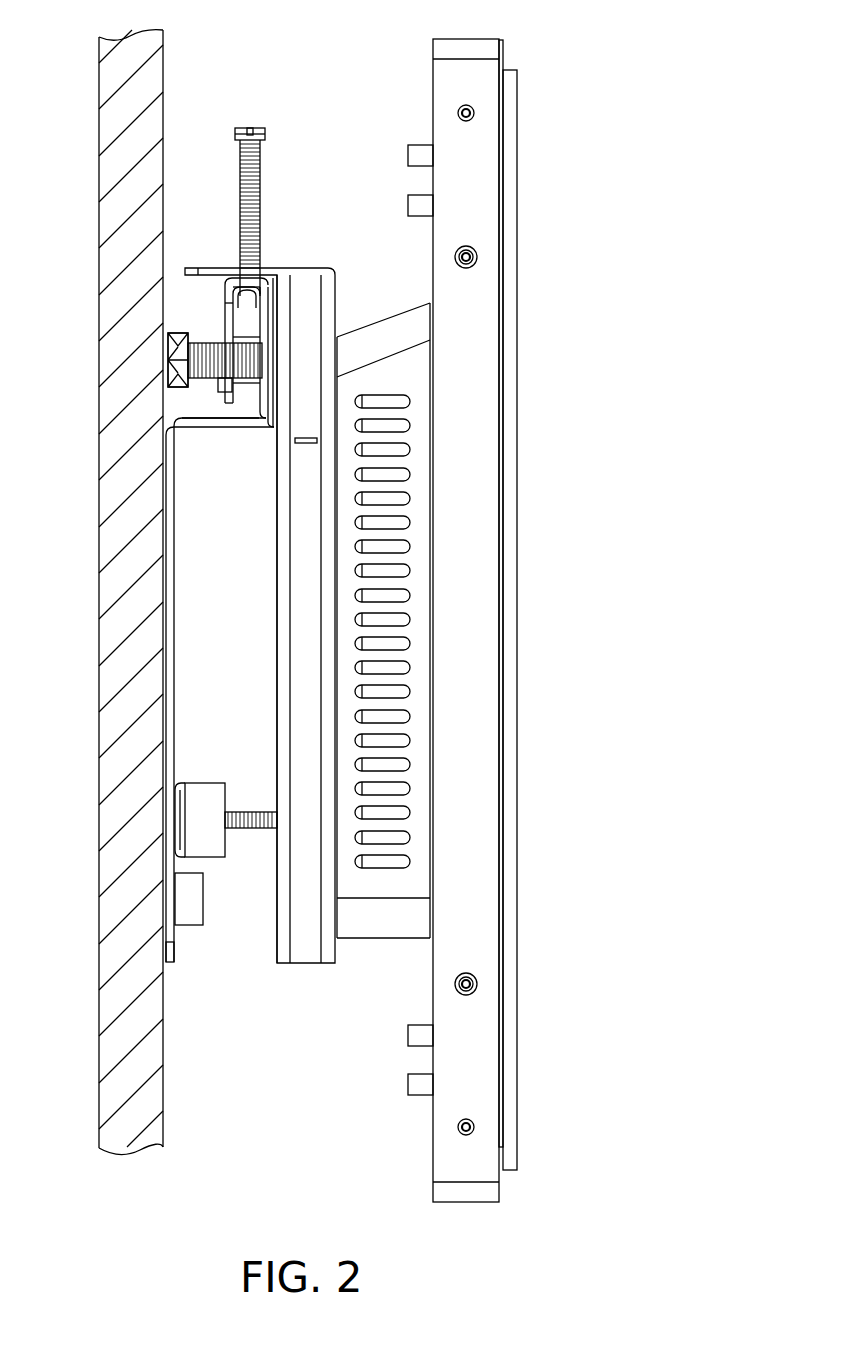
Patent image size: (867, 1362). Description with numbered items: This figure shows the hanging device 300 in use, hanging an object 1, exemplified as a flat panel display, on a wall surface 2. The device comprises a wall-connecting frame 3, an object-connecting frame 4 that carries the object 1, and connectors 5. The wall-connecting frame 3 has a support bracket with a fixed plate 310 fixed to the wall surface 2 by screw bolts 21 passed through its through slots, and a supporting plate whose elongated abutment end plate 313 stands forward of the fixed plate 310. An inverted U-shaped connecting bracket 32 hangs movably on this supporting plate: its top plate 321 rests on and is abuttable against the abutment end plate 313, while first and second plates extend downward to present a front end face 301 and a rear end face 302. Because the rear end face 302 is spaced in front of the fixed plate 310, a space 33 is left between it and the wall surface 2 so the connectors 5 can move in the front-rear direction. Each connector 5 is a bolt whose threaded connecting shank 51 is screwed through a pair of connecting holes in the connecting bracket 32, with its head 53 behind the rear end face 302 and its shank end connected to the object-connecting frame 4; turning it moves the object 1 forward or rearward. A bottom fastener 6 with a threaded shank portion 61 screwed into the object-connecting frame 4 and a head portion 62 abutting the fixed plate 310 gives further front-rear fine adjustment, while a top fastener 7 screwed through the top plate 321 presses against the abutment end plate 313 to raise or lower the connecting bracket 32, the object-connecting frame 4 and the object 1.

The object 1 is at (468, 190).
The wall surface 2 is at (165, 1080).
The wall-connecting frame 3 is at (245, 433).
The object-connecting frame 4 is at (327, 263).
The connector 5 is at (178, 328).
The bottom fastener 6 is at (226, 775).
The top fastener 7 is at (268, 135).
The screw bolt 21 is at (193, 907).
The connecting bracket 32 is at (275, 273).
The space 33 is at (190, 408).
The connecting shank 51 is at (207, 377).
The head 53 is at (175, 350).
The threaded shank portion 61 is at (252, 813).
The head portion 62 is at (200, 798).
The hanging device 300 is at (342, 113).
The front end face 301 is at (277, 308).
The rear end face 302 is at (225, 303).
The fixed plate 310 is at (170, 962).
The abutment end plate 313 is at (233, 288).
The top plate 321 is at (247, 283).